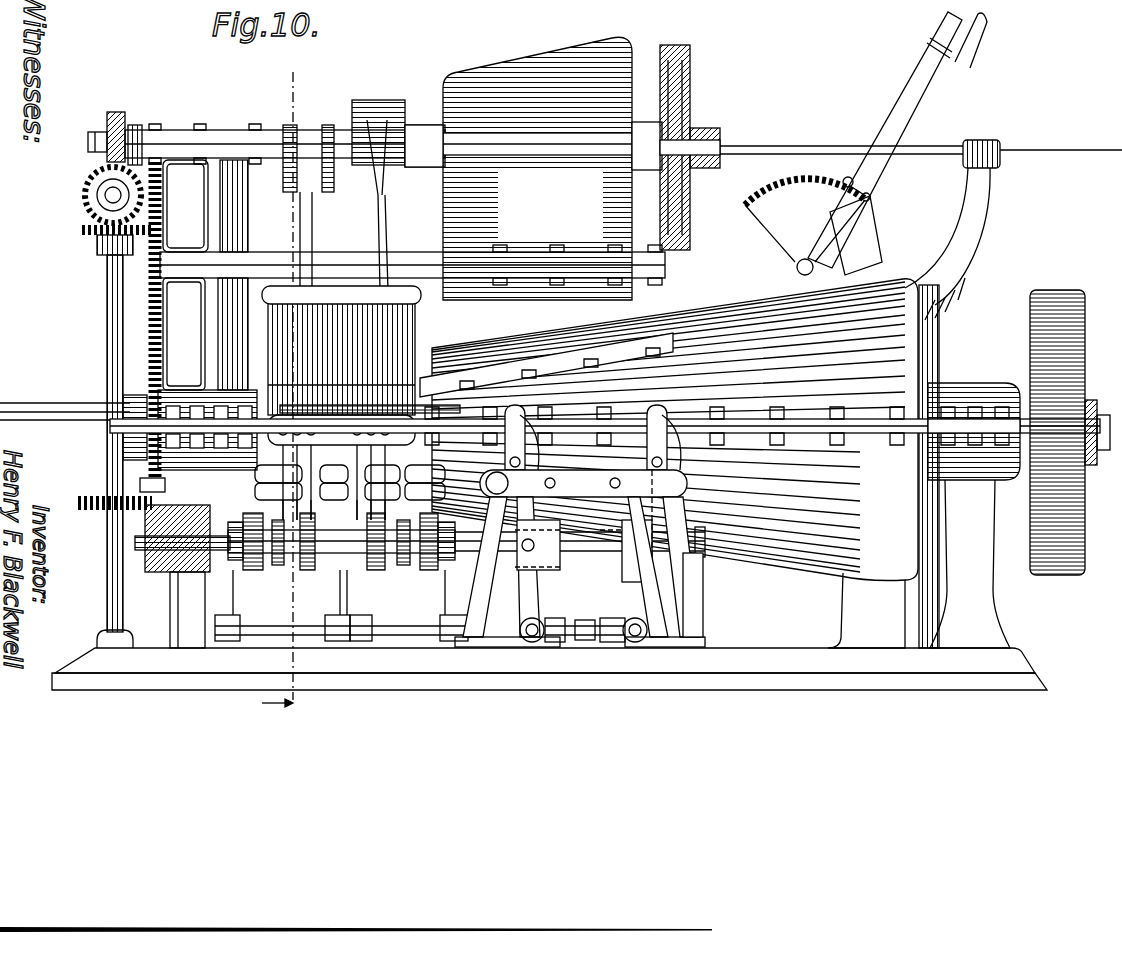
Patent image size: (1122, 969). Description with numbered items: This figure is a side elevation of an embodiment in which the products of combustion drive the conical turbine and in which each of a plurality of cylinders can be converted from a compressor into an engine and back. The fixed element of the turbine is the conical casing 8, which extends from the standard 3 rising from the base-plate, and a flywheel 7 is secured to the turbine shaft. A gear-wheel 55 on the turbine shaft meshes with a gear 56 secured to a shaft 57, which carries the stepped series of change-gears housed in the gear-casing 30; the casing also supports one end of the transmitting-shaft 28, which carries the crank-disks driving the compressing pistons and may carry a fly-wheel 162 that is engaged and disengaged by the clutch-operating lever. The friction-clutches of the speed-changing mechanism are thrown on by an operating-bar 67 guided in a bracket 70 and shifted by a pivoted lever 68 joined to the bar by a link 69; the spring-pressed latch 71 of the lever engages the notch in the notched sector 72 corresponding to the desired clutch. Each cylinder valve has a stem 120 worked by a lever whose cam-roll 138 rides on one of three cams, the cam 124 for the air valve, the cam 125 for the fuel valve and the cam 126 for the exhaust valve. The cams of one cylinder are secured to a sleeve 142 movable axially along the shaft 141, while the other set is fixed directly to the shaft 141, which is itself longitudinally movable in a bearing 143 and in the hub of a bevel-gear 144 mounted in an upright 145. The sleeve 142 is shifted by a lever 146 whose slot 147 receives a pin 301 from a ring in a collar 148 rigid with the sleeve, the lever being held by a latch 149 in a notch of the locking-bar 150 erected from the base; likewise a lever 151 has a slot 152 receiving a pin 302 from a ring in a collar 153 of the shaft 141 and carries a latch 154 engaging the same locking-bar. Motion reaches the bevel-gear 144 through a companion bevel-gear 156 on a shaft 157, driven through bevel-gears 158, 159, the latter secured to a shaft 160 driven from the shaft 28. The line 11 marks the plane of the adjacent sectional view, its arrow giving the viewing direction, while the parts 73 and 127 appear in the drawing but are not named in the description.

The standard 3 is at (190, 333).
The flywheel 7 is at (1050, 305).
The conical casing 8 is at (685, 463).
The section line 11 is at (284, 388).
The transmitting-shaft 28 is at (112, 120).
The gear-casing 30 is at (533, 168).
The gear-wheel 55 is at (152, 489).
The gear 56 is at (150, 298).
The shaft 57 is at (262, 268).
The operating-bar 67 is at (776, 145).
The pivoted lever 68 is at (910, 85).
The link 69 is at (918, 150).
The bracket 70 is at (962, 258).
The spring-pressed latch 71 is at (872, 192).
The notched sector 72 is at (805, 227).
The bolt 73 is at (90, 138).
The valve-stem 120 is at (385, 484).
The cam 124 is at (245, 572).
The cam 125 is at (276, 568).
The cam 126 is at (308, 574).
The eccentric strap 127 is at (370, 196).
The cam-roll 138 is at (382, 502).
The shaft 141 is at (140, 545).
The sleeve 142 is at (471, 520).
The bearing 143 is at (690, 605).
The bevel-gear 144 is at (149, 574).
The upright 145 is at (180, 612).
The lever 146 is at (533, 613).
The slot 147 is at (531, 540).
The collar 148 is at (530, 550).
The latch 149 is at (511, 485).
The locking-bar 150 is at (582, 480).
The lever 151 is at (637, 601).
The slot 152 is at (633, 585).
The collar 153 is at (622, 531).
The latch 154 is at (668, 448).
The companion bevel-gear 156 is at (95, 511).
The shaft 157 is at (110, 350).
The bevel-gear 158 is at (98, 248).
The bevel-gear 159 is at (98, 224).
The shaft 160 is at (113, 196).
The fly-wheel 162 is at (690, 67).
The pin 301 is at (527, 556).
The pin 302 is at (634, 550).